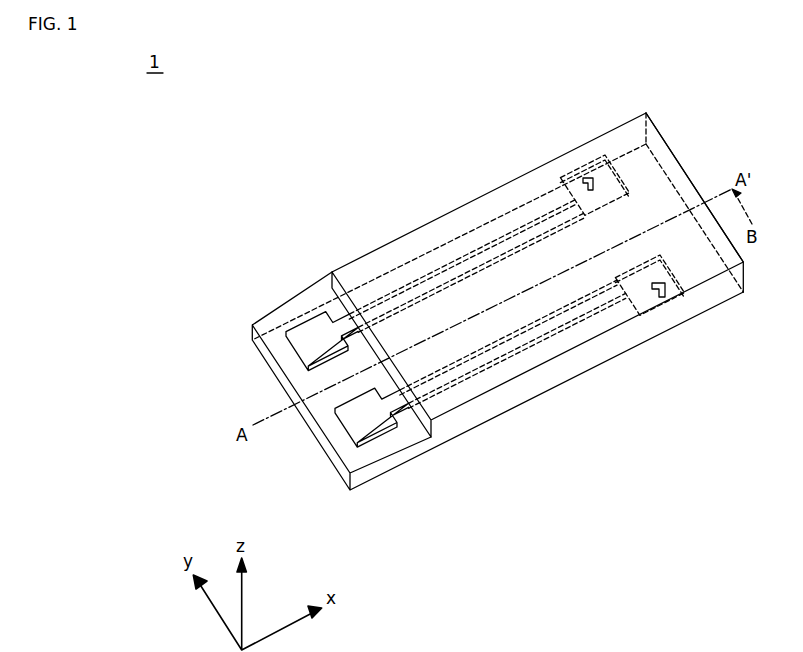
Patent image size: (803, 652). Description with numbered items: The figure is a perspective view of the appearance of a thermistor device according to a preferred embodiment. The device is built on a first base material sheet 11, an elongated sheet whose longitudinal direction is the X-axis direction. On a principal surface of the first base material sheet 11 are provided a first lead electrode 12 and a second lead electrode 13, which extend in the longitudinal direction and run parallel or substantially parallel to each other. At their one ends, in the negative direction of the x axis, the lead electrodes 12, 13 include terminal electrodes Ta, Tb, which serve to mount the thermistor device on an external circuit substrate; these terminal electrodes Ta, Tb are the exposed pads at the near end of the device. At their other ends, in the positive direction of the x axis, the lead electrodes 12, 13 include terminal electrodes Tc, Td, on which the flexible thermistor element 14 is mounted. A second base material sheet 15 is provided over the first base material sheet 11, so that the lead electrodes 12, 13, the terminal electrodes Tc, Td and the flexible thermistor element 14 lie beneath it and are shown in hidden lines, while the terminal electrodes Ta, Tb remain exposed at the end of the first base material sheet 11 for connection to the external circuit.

The first base material sheet 11 is at (380, 477).
The first lead electrode 12 is at (505, 347).
The second lead electrode 13 is at (472, 252).
The flexible thermistor element 14 is at (687, 178).
The second base material sheet 15 is at (628, 133).
The terminal electrode Ta is at (358, 418).
The terminal electrode Tb is at (298, 350).
The terminal electrode Tc is at (681, 303).
The terminal electrode Td is at (588, 163).